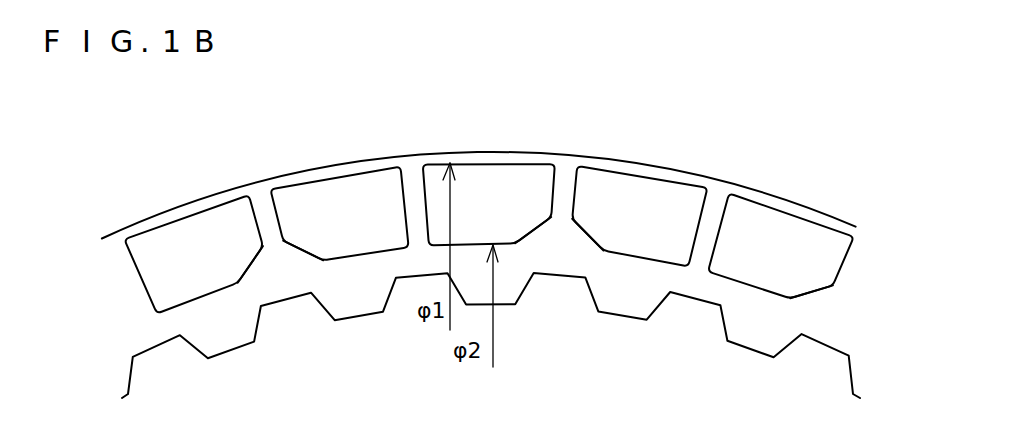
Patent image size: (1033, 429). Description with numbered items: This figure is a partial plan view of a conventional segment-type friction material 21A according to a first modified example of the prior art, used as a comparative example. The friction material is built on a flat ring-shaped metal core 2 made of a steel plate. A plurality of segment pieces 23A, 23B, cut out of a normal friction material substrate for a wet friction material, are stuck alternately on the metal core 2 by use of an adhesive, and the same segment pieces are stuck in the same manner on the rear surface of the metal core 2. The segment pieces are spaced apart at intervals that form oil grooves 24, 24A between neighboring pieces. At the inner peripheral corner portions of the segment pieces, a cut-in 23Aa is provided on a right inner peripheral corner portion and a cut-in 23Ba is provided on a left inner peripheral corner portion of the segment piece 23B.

The segment-type friction material 21A is at (297, 158).
The segment piece 23A is at (172, 248).
The segment piece 23B is at (345, 192).
The oil groove 24 is at (414, 205).
The oil groove 24A is at (263, 220).
The cut-in 23Aa is at (248, 270).
The cut-in 23Ba is at (302, 253).
The metal core 2 is at (647, 300).